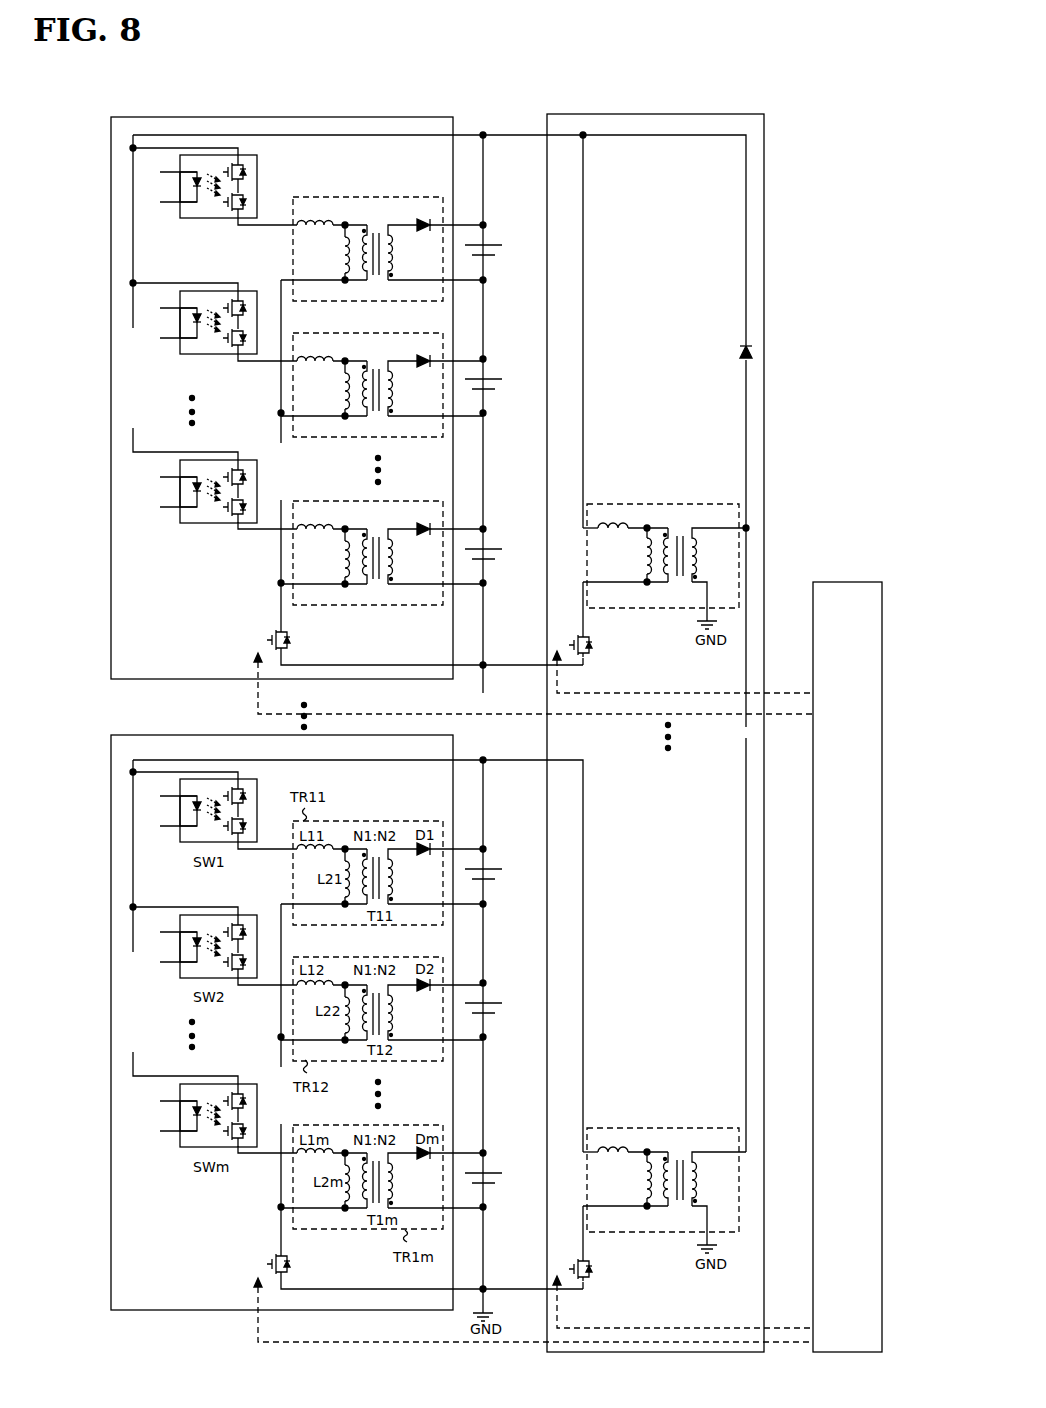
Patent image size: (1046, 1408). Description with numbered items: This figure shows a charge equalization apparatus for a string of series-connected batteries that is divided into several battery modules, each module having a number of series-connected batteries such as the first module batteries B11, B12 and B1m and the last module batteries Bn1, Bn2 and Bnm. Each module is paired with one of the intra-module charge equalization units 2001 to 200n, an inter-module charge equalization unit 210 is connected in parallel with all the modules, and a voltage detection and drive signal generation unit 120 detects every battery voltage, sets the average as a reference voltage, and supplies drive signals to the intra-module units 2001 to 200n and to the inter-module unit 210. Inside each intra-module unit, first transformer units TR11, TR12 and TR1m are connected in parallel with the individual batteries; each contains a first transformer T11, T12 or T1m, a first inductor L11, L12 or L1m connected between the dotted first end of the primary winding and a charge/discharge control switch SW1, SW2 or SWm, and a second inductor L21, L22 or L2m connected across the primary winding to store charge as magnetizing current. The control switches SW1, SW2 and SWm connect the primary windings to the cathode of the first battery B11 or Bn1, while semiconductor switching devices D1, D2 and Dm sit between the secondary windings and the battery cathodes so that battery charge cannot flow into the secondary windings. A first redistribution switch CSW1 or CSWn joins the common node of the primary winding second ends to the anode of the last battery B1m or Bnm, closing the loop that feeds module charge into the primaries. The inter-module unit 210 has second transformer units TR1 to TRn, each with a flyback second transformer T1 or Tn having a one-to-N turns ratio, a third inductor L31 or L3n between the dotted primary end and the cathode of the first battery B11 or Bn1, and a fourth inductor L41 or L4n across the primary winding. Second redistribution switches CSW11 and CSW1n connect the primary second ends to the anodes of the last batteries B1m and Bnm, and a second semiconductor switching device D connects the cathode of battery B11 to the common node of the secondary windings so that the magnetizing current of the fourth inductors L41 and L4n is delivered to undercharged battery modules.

The intra-module charge equalization unit 2001 is at (111, 172).
The intra-module charge equalization unit 200n is at (111, 822).
The inter-module charge equalization unit 210 is at (700, 114).
The voltage detection and drive signal generation unit 120 is at (838, 582).
The charge/discharge control switch SW1 is at (208, 200).
The charge/discharge control switch SW2 is at (208, 336).
The charge/discharge control switch SWm is at (208, 505).
The first transformer unit TR11 is at (303, 197).
The first transformer unit TR12 is at (305, 436).
The first transformer unit TR1m is at (405, 606).
The first inductor L11 is at (312, 212).
The second inductor L21 is at (330, 255).
The semiconductor switching device D1 is at (425, 211).
The first transformer T11 is at (379, 292).
The first inductor L12 is at (312, 346).
The second inductor L22 is at (328, 387).
The semiconductor switching device D2 is at (425, 345).
The first transformer T12 is at (379, 426).
The first inductor L1m is at (314, 516).
The second inductor L2m is at (328, 558).
The semiconductor switching device Dm is at (427, 515).
The first transformer T1m is at (382, 596).
The first battery B11 is at (498, 253).
The battery B12 is at (498, 387).
The last battery B1m is at (501, 557).
The first battery Bn1 is at (498, 877).
The battery Bn2 is at (498, 1011).
The last battery Bnm is at (501, 1181).
The first redistribution switch CSW1 is at (303, 640).
The first redistribution switch CSWn is at (303, 1264).
The second redistribution switch CSW11 is at (606, 657).
The second redistribution switch CSW1n is at (606, 1281).
The second transformer unit TR1 is at (629, 504).
The second transformer unit TRn is at (629, 1128).
The third inductor L31 is at (616, 515).
The fourth inductor L41 is at (628, 558).
The second transformer T1 is at (685, 595).
The third inductor L3n is at (616, 1139).
The fourth inductor L4n is at (628, 1182).
The second transformer Tn is at (685, 1219).
The second semiconductor switching device D is at (737, 354).